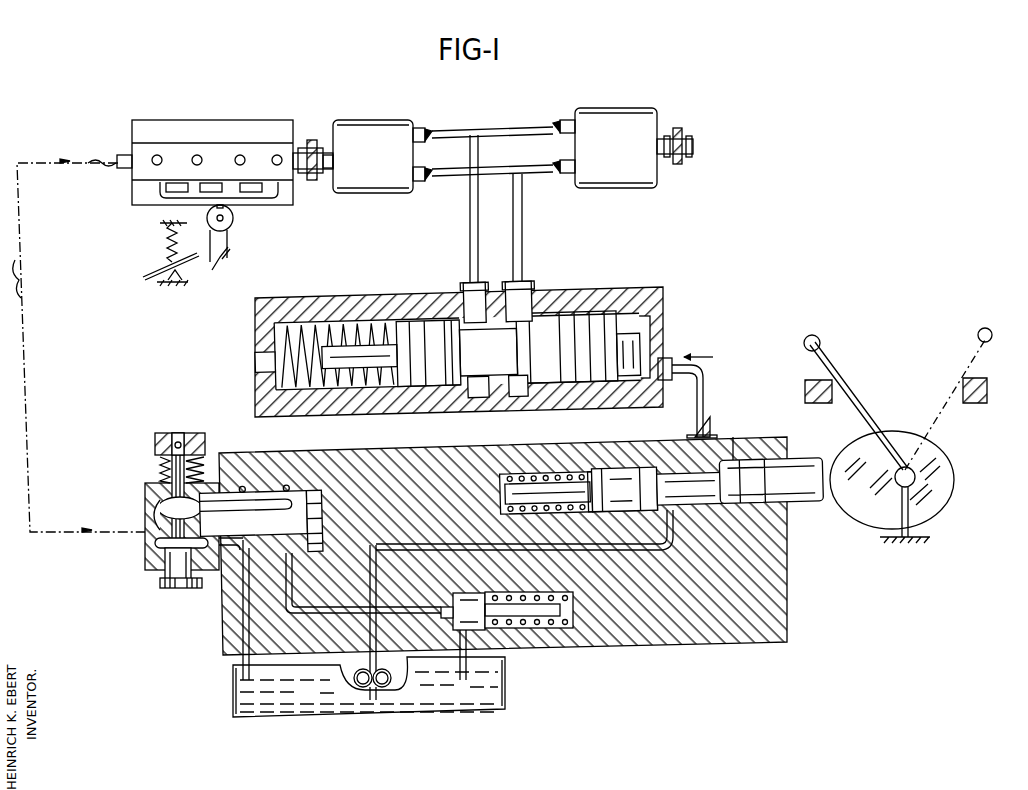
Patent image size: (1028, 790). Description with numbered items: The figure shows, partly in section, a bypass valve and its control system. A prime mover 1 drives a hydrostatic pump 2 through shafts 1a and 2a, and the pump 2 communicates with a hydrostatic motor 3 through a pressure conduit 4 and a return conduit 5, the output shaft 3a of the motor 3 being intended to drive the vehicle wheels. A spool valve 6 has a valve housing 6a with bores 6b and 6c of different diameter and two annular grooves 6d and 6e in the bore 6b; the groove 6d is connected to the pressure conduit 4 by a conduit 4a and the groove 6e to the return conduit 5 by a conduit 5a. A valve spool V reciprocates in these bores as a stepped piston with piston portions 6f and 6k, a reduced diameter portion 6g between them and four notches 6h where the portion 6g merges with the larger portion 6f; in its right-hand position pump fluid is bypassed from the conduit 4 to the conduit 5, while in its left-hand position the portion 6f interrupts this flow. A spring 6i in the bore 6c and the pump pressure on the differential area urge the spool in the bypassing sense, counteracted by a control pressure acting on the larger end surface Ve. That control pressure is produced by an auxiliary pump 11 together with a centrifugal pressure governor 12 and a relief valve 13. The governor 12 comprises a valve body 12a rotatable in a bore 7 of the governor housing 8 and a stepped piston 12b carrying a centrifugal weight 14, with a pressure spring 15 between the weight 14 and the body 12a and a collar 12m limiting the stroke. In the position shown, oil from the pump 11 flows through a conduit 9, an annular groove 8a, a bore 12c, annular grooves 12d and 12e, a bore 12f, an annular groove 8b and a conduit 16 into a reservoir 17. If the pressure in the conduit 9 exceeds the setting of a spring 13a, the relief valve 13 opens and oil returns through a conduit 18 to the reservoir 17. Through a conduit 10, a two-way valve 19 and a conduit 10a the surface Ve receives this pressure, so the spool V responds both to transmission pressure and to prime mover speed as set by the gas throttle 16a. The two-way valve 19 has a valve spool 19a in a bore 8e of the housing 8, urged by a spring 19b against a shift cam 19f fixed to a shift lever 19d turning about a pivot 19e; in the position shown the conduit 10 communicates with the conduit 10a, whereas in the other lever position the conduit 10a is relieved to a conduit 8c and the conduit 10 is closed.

The prime mover 1 is at (262, 120).
The shaft 1a is at (297, 150).
The hydrostatic pump 2 is at (396, 120).
The shaft 2a is at (325, 177).
The hydrostatic motor 3 is at (632, 115).
The output shaft 3a is at (658, 166).
The pressure conduit 4 is at (495, 129).
The conduit 4a is at (470, 233).
The return conduit 5 is at (500, 175).
The conduit 5a is at (522, 244).
The spool valve 6 is at (628, 288).
The valve housing 6a is at (566, 305).
The bore 6b is at (632, 378).
The bore 6c is at (340, 336).
The annular groove 6d is at (463, 308).
The annular groove 6e is at (528, 300).
The piston portion 6f is at (604, 310).
The reduced diameter portion 6g is at (468, 370).
The notches 6h is at (522, 361).
The spring 6i is at (294, 326).
The piston portion 6k is at (423, 308).
The bore 7 is at (319, 490).
The control governor housing 8 is at (393, 457).
The annular groove 8a is at (287, 486).
The annular groove 8b is at (243, 486).
The conduit 8c is at (731, 436).
The bore 8e is at (540, 470).
The conduit 9 is at (288, 596).
The conduit 10 is at (622, 536).
The conduit 10a is at (707, 379).
The auxiliary pump 11 is at (393, 687).
The centrifugal pressure governor 12 is at (167, 598).
The valve body 12a is at (160, 500).
The stepped piston 12b is at (163, 560).
The bore 12c is at (260, 502).
The annular groove 12d is at (160, 507).
The annular groove 12e is at (156, 545).
The bore 12f is at (227, 544).
The collar 12m is at (168, 584).
The relief valve 13 is at (473, 628).
The spring 13a is at (535, 630).
The centrifugal weight 14 is at (158, 446).
The pressure spring 15 is at (160, 475).
The conduit 16 is at (247, 598).
The gas throttle 16a is at (196, 263).
The reservoir 17 is at (233, 695).
The conduit 18 is at (468, 678).
The two-way valve 19 is at (744, 458).
The valve spool 19a is at (604, 472).
The spring 19b is at (501, 470).
The shift lever 19d is at (855, 398).
The pivot 19e is at (920, 486).
The shift cam 19f is at (857, 510).
The valve spool V is at (460, 387).
The end surface Ve is at (634, 318).